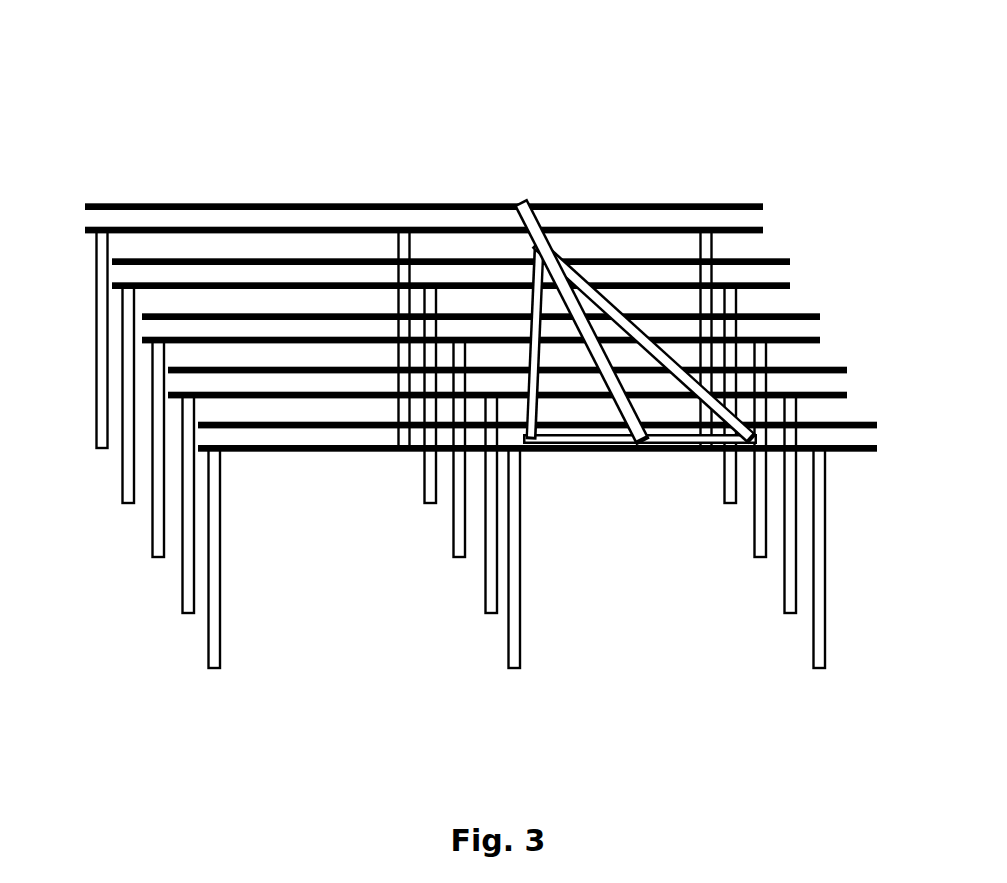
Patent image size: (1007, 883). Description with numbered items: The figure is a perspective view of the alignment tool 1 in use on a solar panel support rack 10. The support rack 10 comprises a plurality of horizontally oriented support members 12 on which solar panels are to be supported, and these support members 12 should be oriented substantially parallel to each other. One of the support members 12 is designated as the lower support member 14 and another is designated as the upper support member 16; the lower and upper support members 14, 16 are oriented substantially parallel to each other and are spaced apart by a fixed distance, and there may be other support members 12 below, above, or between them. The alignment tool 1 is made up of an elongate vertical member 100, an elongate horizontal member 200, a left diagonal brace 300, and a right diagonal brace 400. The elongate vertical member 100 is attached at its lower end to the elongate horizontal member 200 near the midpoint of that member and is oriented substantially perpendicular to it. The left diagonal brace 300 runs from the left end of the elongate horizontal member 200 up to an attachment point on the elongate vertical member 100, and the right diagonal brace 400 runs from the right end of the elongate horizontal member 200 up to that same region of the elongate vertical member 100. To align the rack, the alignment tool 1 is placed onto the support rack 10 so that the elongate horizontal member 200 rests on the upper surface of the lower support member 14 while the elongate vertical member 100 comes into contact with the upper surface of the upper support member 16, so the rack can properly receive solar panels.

The alignment tool 1 is at (639, 290).
The solar panel support rack 10 is at (448, 370).
The support members 12 is at (203, 212).
The lower support member 14 is at (357, 440).
The upper support member 16 is at (322, 218).
The elongate vertical member 100 is at (613, 420).
The elongate horizontal member 200 is at (683, 452).
The left diagonal brace 300 is at (540, 410).
The right diagonal brace 400 is at (722, 452).